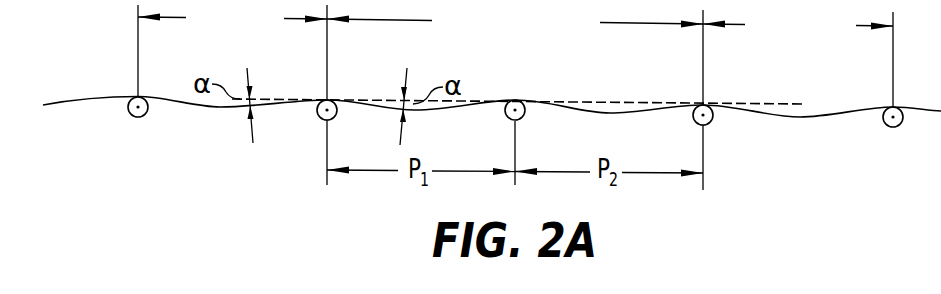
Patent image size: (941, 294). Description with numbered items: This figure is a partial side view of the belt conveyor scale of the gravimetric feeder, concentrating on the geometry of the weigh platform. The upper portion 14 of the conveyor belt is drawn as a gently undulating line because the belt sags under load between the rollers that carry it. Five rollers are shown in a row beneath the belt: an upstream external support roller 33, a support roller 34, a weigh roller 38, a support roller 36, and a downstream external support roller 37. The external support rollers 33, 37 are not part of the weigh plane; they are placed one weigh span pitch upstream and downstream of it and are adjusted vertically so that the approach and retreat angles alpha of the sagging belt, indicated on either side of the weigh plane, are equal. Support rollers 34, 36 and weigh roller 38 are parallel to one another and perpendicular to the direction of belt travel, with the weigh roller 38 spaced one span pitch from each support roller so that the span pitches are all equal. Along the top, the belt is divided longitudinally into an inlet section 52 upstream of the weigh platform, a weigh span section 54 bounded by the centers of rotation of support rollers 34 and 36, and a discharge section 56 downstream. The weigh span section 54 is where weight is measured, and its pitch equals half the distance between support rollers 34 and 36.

The upper portion of conveyor belt 14 is at (823, 116).
The external support roller 33 is at (136, 118).
The support roller 34 is at (317, 112).
The weigh roller 38 is at (505, 118).
The support roller 36 is at (714, 124).
The external support roller 37 is at (893, 127).
The inlet section 52 is at (232, 20).
The weigh span section 54 is at (515, 22).
The discharge section 56 is at (798, 39).